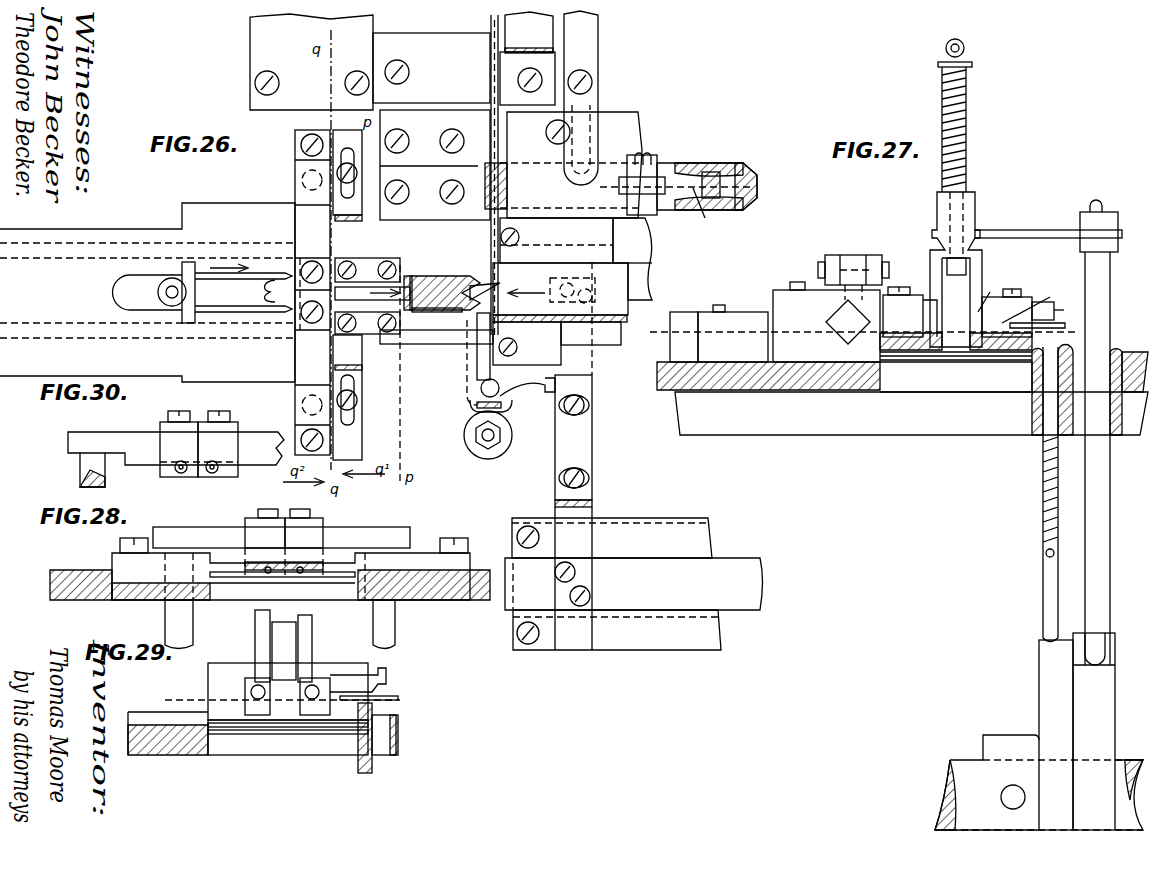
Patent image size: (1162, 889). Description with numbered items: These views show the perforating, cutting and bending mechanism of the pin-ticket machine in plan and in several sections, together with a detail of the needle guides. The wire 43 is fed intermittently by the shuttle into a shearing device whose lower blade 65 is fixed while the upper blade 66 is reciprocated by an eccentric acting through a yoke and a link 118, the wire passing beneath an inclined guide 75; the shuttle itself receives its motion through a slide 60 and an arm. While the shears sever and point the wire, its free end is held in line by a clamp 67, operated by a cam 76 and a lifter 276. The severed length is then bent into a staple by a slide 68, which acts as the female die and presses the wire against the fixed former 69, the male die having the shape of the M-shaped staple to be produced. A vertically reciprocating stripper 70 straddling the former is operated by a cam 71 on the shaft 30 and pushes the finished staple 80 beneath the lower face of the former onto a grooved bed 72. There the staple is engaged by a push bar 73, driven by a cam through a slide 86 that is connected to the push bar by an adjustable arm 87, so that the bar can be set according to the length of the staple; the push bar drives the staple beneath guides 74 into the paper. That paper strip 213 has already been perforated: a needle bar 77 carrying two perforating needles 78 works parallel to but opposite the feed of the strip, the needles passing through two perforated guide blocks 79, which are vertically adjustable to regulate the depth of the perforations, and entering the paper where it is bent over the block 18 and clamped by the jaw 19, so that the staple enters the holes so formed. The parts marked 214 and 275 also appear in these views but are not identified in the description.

In FIG. 26, the block 18 is at (295, 153).
In FIG. 28, the block 18 is at (328, 580).
In FIG. 26, the jaw 19 is at (300, 220).
In FIG. 30, the jaw 19 is at (176, 459).
In FIG. 28, the jaw 19 is at (281, 529).
In FIG. 27, the shaft 30 is at (1039, 782).
In FIG. 26, the wire 43 is at (483, 172).
In FIG. 27, the wire 43 is at (768, 315).
In FIG. 27, the slide 60 is at (848, 322).
In FIG. 27, the lower blade 65 is at (826, 322).
In FIG. 26, the upper blade 66 is at (678, 181).
In FIG. 26, the clamp 67 is at (470, 380).
In FIG. 29, the clamp 67 is at (370, 695).
In FIG. 27, the clamp 67 is at (1066, 303).
In FIG. 26, the slide 68 is at (562, 285).
In FIG. 29, the slide 68 is at (250, 678).
In FIG. 27, the slide 68 is at (928, 310).
In FIG. 26, the former 69 is at (440, 276).
In FIG. 27, the former 69 is at (956, 193).
In FIG. 26, the stripper 70 is at (416, 276).
In FIG. 29, the stripper 70 is at (255, 628).
In FIG. 27, the stripper 70 is at (990, 291).
In FIG. 27, the cam 71 is at (1094, 731).
In FIG. 27, the grooved bed 72 is at (950, 347).
In FIG. 26, the push bar 73 is at (652, 285).
In FIG. 29, the push bar 73 is at (283, 722).
In FIG. 27, the push bar 73 is at (962, 347).
In FIG. 26, the guides 74 is at (378, 262).
In FIG. 29, the guides 74 is at (252, 700).
In FIG. 29, the inclined guide 75 is at (354, 677).
In FIG. 27, the inclined guide 75 is at (1033, 303).
In FIG. 27, the cam 76 is at (1056, 735).
In FIG. 26, the needle bar 77 is at (154, 292).
In FIG. 26, the perforating needles 78 is at (243, 292).
In FIG. 28, the perforating needles 78 is at (268, 562).
In FIG. 26, the perforated guide blocks 79 is at (306, 332).
In FIG. 30, the perforated guide blocks 79 is at (199, 444).
In FIG. 28, the perforated guide blocks 79 is at (255, 524).
In FIG. 26, the staple 80 is at (262, 292).
In FIG. 29, the staple 80 is at (265, 722).
In FIG. 27, the staple 80 is at (956, 341).
In FIG. 26, the slide 86 is at (634, 584).
In FIG. 26, the adjustable arm 87 is at (585, 428).
In FIG. 26, the link 118 is at (712, 211).
In FIG. 27, the link 118 is at (853, 259).
In FIG. 26, the strip 213 is at (650, 255).
In FIG. 28, the strip 213 is at (245, 577).
In FIG. 26, the slotted plate 214 is at (343, 133).
In FIG. 27, the bolt 275 is at (1048, 432).
In FIG. 26, the lifter 276 is at (474, 394).
In FIG. 29, the lifter 276 is at (385, 743).
In FIG. 27, the lifter 276 is at (1038, 494).